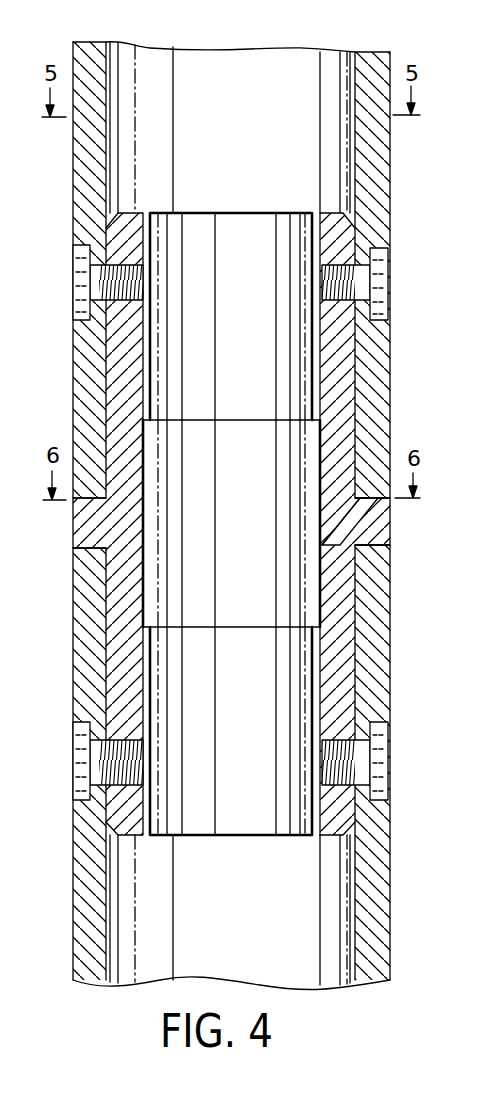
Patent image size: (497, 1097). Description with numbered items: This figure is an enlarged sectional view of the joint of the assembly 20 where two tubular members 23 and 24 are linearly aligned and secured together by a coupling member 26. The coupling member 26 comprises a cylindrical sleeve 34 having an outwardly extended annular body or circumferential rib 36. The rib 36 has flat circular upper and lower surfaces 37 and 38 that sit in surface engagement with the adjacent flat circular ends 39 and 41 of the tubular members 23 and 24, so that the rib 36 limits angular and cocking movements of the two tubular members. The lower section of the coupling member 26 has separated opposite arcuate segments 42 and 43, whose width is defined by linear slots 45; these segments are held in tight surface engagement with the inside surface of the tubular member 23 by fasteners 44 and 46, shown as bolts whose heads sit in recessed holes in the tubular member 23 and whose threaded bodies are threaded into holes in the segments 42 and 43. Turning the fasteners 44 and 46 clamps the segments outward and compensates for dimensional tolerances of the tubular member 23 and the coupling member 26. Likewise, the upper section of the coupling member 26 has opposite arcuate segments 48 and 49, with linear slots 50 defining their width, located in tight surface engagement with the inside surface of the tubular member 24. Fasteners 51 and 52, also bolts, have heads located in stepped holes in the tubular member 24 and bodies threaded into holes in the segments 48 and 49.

The downhole tool assembly 20 is at (398, 40).
The tubular member 23 is at (377, 934).
The tubular member 24 is at (378, 186).
The coupling member 26 is at (397, 537).
The cylindrical sleeve 34 is at (378, 714).
The circumferential rib 36 is at (361, 540).
The upper surface 37 is at (353, 512).
The lower surface 38 is at (352, 540).
The end 39 is at (375, 565).
The end 41 is at (388, 486).
The arcuate segment 42 is at (128, 830).
The arcuate segment 43 is at (348, 838).
The fastener 44 is at (78, 782).
The linear slot 45 is at (308, 835).
The fastener 46 is at (380, 778).
The arcuate segment 48 is at (128, 228).
The arcuate segment 49 is at (343, 246).
The linear slot 50 is at (308, 213).
The fastener 51 is at (73, 302).
The fastener 52 is at (380, 293).